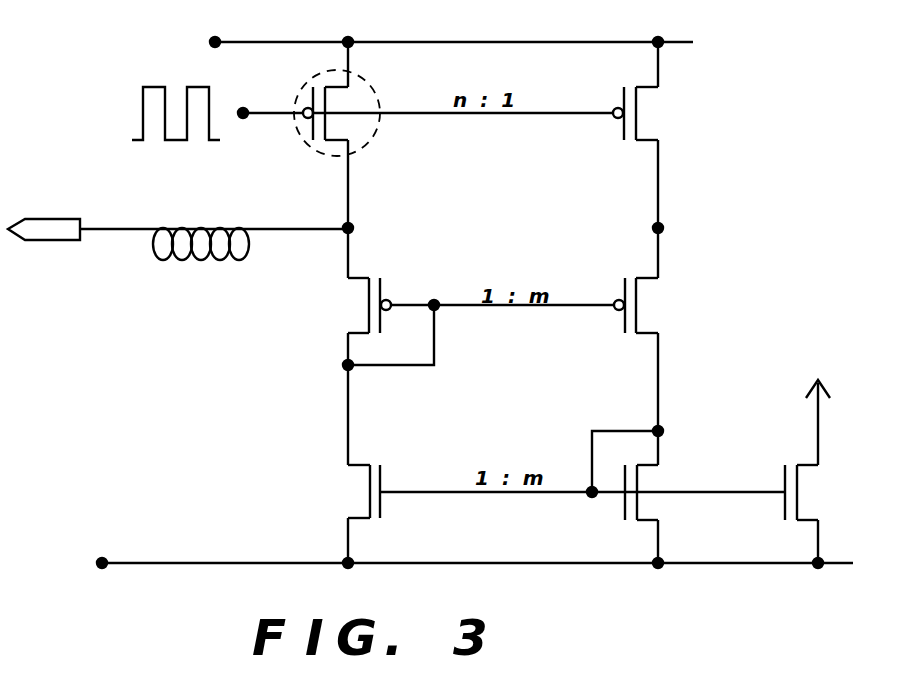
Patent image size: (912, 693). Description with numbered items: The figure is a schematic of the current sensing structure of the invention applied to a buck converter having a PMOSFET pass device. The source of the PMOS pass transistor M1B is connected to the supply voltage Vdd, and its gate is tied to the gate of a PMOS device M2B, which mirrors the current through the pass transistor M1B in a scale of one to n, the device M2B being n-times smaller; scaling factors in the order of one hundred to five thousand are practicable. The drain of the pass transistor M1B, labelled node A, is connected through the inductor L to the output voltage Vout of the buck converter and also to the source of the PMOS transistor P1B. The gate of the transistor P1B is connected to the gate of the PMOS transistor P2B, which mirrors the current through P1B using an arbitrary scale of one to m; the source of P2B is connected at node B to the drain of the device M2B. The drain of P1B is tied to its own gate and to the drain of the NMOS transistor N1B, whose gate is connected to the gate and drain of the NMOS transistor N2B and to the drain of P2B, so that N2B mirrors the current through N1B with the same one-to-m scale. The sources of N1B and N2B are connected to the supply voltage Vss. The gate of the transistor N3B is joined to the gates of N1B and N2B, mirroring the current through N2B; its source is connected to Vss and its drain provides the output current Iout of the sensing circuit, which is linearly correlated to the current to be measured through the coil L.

The VDD voltage Vdd is at (417, 41).
The VSS voltage Vss is at (446, 555).
The PMOS pass transistor M1B is at (362, 135).
The PMOS device M2B is at (659, 135).
The output voltage Vout is at (76, 212).
The inductor L is at (246, 259).
The node A is at (359, 248).
The node B is at (644, 248).
The PMOS transistor P1B is at (374, 371).
The PMOS transistor P2B is at (653, 371).
The NMOS transistor N1B is at (397, 503).
The NMOS transistor N2B is at (641, 502).
The transistor N3B is at (825, 514).
The output current Iout is at (823, 406).